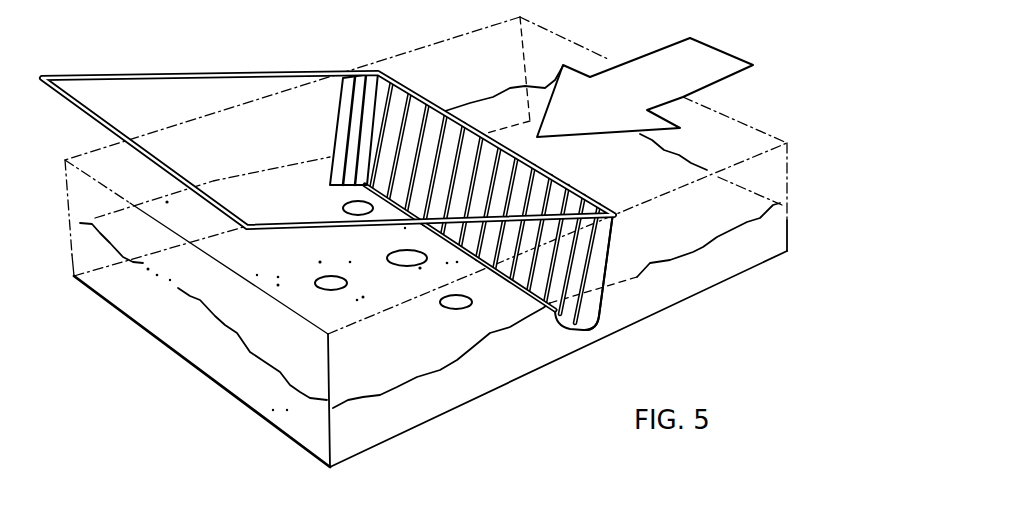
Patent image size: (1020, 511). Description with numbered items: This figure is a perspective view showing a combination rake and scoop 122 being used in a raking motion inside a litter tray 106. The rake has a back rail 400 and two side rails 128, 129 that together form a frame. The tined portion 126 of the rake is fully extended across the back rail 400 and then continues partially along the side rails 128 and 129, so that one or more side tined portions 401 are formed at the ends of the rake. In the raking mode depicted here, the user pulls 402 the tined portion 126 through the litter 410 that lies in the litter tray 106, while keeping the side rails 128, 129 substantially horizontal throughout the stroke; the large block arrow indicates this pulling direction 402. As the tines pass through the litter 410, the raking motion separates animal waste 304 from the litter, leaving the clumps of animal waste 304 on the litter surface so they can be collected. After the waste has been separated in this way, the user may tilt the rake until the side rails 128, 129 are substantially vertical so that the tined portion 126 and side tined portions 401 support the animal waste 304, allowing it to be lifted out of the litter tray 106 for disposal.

The litter tray 106 is at (795, 112).
The heat sink assembly 122 is at (255, 60).
The tined portion 126 is at (462, 115).
The side rail 128 is at (387, 228).
The side rail 129 is at (213, 76).
The animal waste 304 is at (331, 290).
The back rail 400 is at (560, 172).
The side tined portion 401 is at (600, 273).
The pulling motion 402 is at (628, 109).
The litter 410 is at (273, 257).